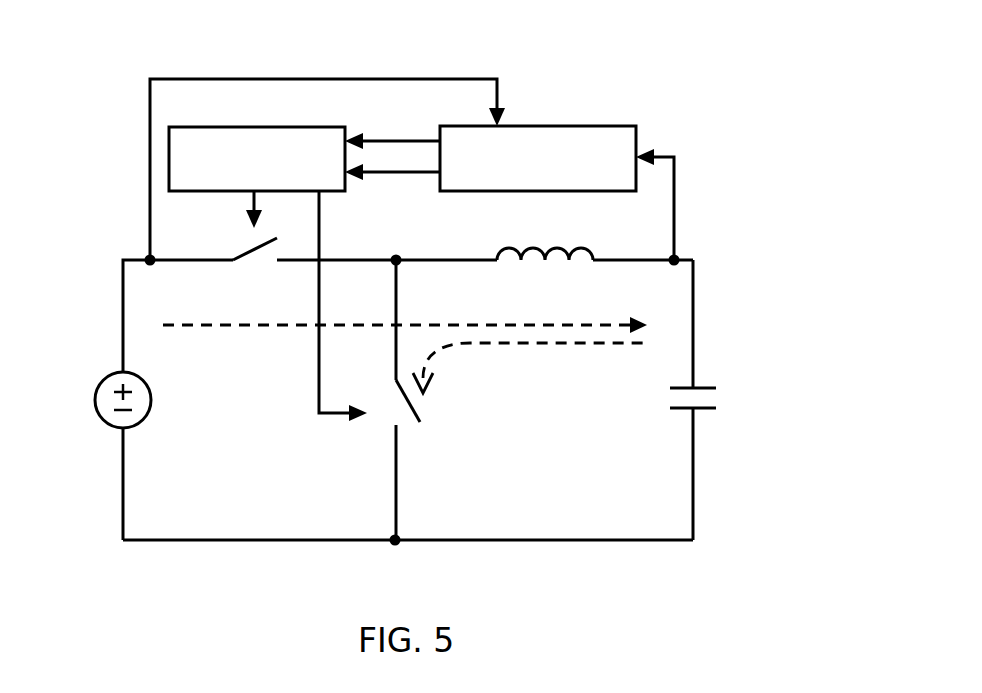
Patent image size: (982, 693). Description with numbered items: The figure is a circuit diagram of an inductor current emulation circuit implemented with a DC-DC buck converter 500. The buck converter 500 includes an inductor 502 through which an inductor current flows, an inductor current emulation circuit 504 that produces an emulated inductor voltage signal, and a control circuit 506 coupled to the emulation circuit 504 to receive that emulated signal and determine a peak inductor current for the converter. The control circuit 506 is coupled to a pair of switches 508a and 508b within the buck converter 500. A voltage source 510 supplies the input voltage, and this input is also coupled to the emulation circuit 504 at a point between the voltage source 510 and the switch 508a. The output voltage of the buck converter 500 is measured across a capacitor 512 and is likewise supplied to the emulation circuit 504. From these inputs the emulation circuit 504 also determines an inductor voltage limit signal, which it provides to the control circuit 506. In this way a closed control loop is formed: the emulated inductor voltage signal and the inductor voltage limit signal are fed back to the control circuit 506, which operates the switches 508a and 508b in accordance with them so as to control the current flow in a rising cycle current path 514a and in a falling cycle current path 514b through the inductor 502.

The DC-DC buck converter 500 is at (776, 45).
The inductor 502 is at (553, 262).
The inductor current emulation circuit 504 is at (509, 193).
The control circuit 506 is at (327, 250).
The switch 508a is at (253, 256).
The switch 508b is at (415, 405).
The voltage source 510 is at (110, 373).
The capacitor 512 is at (703, 387).
The rising cycle current path 514a is at (262, 328).
The falling cycle current path 514b is at (503, 345).